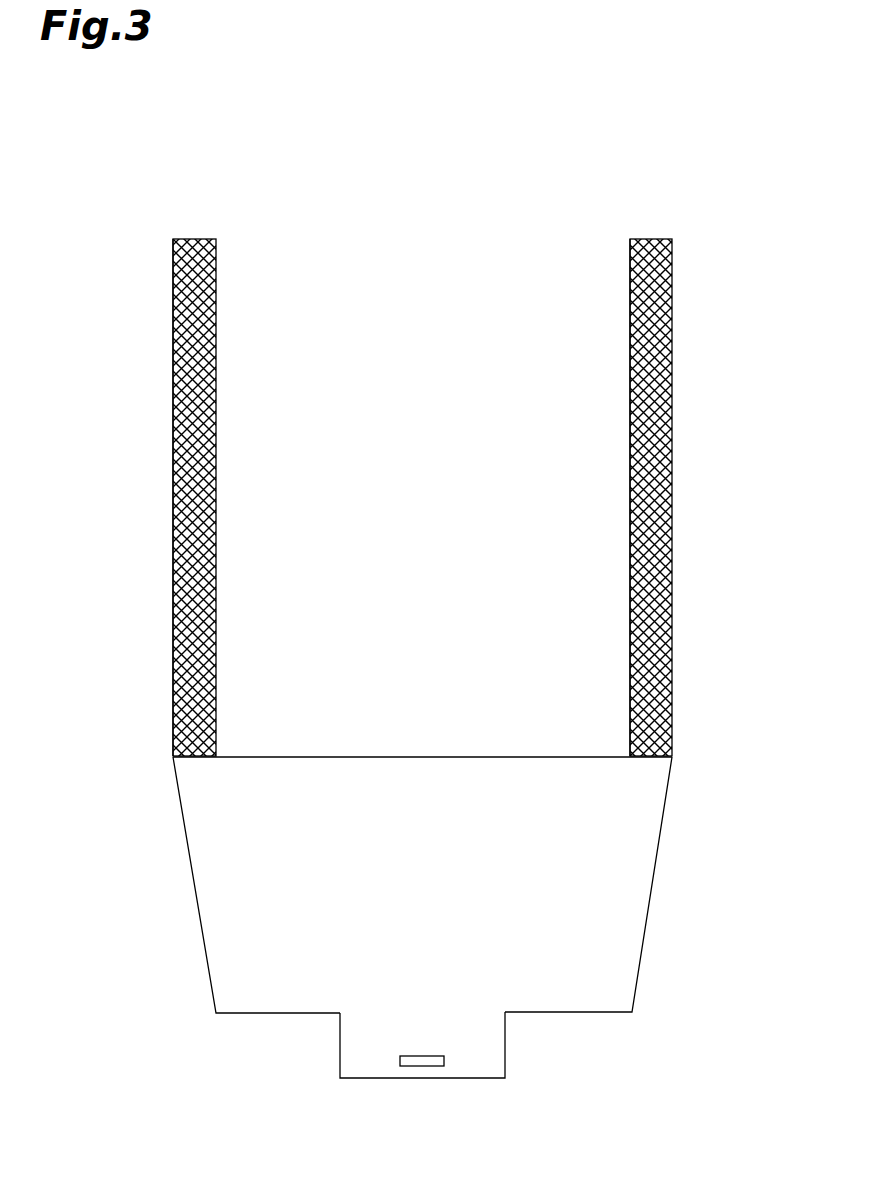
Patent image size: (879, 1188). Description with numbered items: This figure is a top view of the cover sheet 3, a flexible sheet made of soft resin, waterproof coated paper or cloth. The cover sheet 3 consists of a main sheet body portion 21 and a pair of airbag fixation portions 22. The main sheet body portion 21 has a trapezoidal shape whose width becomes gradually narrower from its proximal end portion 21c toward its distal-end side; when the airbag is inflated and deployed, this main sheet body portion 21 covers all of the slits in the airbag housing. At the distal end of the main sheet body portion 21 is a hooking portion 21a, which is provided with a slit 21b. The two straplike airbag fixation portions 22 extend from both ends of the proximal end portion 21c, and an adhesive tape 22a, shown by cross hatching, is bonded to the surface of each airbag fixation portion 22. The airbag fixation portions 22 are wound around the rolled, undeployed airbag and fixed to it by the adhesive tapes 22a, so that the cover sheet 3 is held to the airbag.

The cover sheet 3 is at (681, 159).
The main sheet body portion 21 is at (620, 843).
The hooking portion 21a is at (505, 1078).
The slit 21b is at (410, 1056).
The proximal end portion 21c is at (423, 756).
The airbag fixation portion 22 is at (173, 239).
The adhesive tape 22a is at (173, 318).